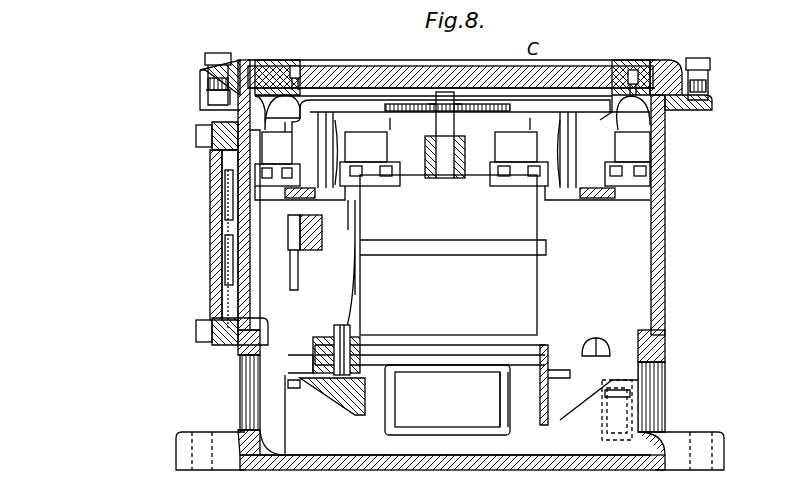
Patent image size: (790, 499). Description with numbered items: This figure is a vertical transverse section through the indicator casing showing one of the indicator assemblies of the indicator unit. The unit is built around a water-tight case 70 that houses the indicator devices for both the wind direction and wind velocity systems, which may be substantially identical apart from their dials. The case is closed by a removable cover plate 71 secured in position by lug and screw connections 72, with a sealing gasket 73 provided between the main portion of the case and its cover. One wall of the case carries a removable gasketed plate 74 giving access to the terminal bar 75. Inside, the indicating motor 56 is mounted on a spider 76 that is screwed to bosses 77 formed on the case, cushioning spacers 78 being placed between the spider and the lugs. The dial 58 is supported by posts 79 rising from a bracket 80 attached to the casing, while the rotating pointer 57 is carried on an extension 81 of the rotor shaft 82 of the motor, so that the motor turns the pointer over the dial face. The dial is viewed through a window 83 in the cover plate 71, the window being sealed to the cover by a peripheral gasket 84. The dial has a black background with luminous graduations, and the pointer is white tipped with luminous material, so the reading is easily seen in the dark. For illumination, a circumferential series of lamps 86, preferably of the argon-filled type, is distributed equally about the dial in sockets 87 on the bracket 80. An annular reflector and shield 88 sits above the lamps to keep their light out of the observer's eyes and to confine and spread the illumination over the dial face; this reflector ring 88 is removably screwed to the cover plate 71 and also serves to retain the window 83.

The indicating motor 56 is at (537, 225).
The rotating pointer 57 is at (512, 116).
The dial 58 is at (305, 118).
The water-tight case 70 is at (666, 250).
The cover plate 71 is at (668, 68).
The lug and screw connections 72 is at (205, 76).
The sealing gasket 73 is at (265, 66).
The removable gasketed plate 74 is at (210, 218).
The terminal bar 75 is at (312, 255).
The spider 76 is at (335, 380).
The bosses 77 is at (400, 432).
The cushioning spacers 78 is at (290, 388).
The posts 79 is at (305, 204).
The bracket 80 is at (345, 298).
The extension of the rotor shaft 81 is at (442, 126).
The rotor shaft 82 is at (440, 156).
The window 83 is at (566, 78).
The peripheral gasket 84 is at (294, 66).
The lamps 86 is at (385, 120).
The sockets 87 is at (370, 145).
The annular reflector and shield 88 is at (605, 100).